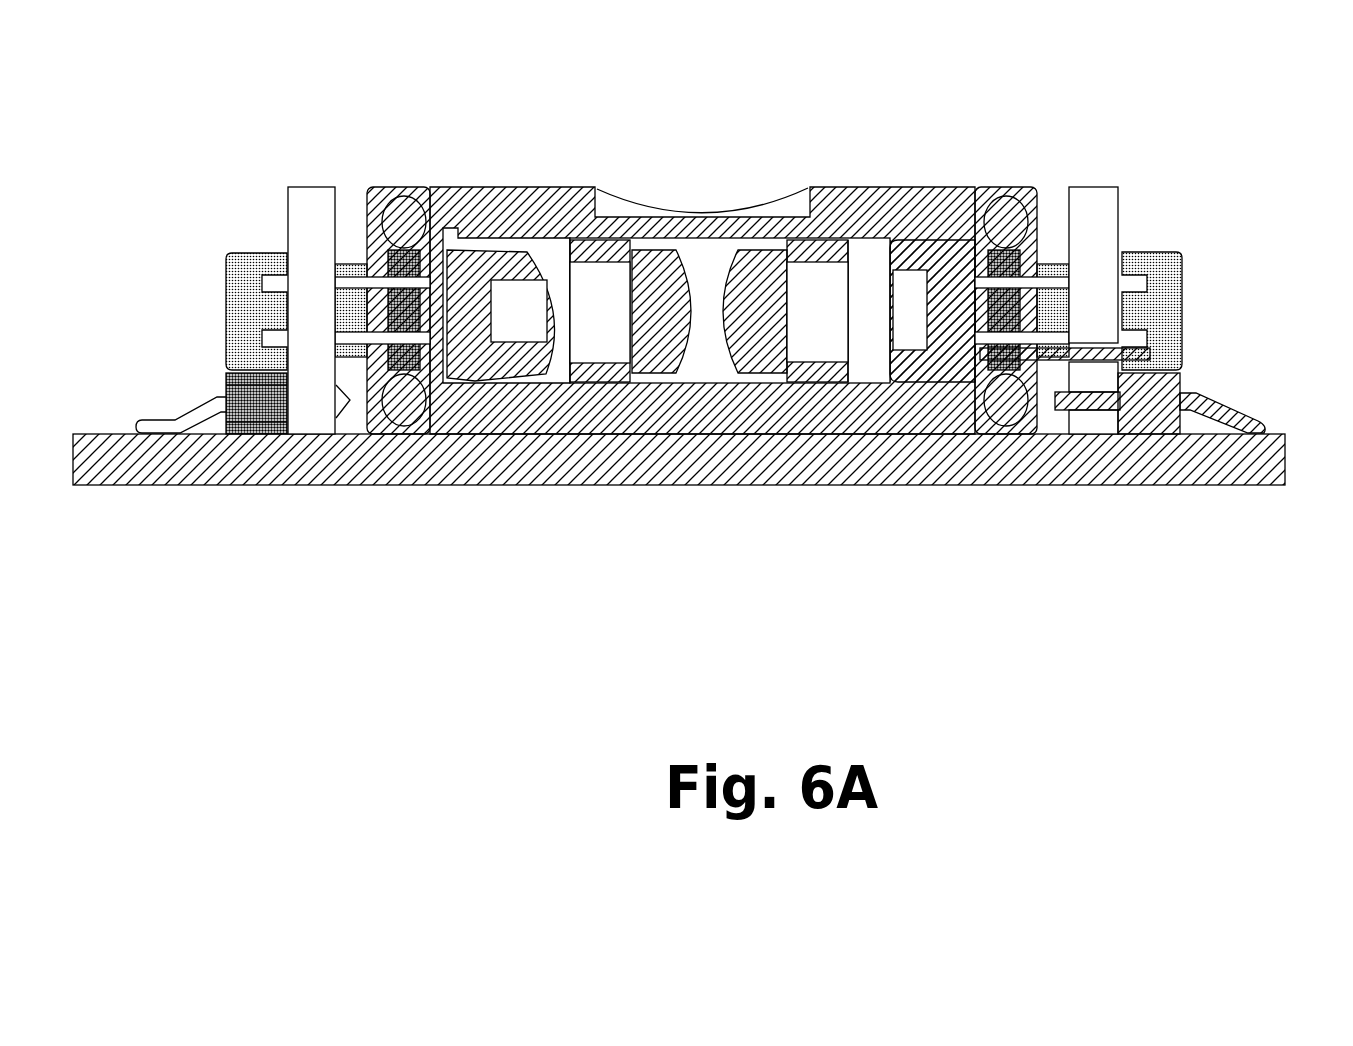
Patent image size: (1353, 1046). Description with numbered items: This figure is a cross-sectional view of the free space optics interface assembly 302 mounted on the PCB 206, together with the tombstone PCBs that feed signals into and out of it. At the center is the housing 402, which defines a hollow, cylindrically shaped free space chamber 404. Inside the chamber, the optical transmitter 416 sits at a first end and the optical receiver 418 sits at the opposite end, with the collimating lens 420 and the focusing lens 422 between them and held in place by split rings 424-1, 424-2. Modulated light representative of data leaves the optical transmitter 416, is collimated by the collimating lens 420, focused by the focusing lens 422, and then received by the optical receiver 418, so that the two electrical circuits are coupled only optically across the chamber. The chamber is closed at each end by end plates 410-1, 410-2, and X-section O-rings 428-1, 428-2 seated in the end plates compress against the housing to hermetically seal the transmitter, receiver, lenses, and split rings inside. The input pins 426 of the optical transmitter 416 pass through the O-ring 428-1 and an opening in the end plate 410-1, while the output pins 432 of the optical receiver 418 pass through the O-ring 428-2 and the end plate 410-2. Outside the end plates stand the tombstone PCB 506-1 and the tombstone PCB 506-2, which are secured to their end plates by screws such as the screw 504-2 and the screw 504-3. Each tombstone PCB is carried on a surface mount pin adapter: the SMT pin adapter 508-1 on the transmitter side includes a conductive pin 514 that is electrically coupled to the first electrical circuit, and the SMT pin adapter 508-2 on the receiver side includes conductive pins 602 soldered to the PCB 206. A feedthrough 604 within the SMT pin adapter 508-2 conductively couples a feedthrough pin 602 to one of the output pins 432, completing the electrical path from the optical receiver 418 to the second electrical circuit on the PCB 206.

The PCB 206 is at (1140, 480).
The free space optics interface assembly 302 is at (709, 330).
The housing 402 is at (548, 190).
The free space chamber 404 is at (600, 340).
The end plate 410-1 is at (360, 330).
The end plate 410-2 is at (1045, 262).
The optical transmitter 416 is at (470, 235).
The optical receiver 418 is at (905, 232).
The collimating lens 420 is at (668, 210).
The focusing lens 422 is at (738, 250).
The split ring 424-1 is at (603, 240).
The split ring 424-2 is at (808, 240).
The input pins 426 is at (363, 358).
The O-ring 428-1 is at (404, 212).
The O-ring 428-2 is at (1006, 215).
The output pins 432 is at (1045, 358).
The screw 504-2 is at (226, 258).
The screw 504-3 is at (1180, 255).
The tombstone PCB 506-1 is at (302, 205).
The tombstone PCB 506-2 is at (1110, 215).
The SMT pin adapter 508-1 is at (250, 438).
The SMT pin adapter 508-2 is at (1180, 385).
The pin 514 is at (148, 420).
The conductive pins 602 is at (1258, 420).
The feedthrough 604 is at (1085, 410).